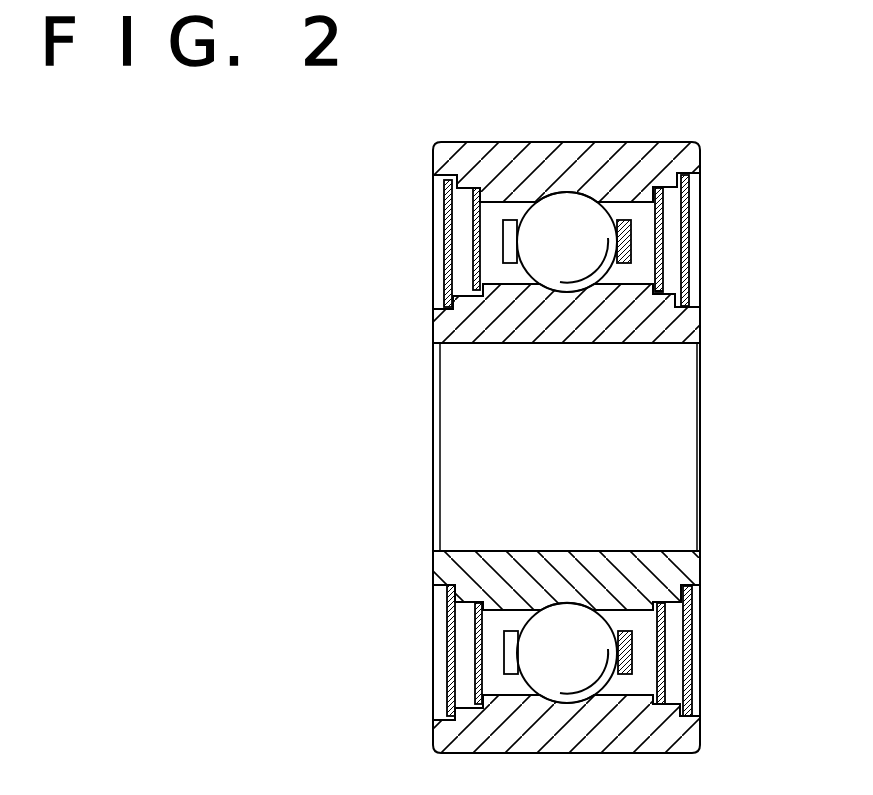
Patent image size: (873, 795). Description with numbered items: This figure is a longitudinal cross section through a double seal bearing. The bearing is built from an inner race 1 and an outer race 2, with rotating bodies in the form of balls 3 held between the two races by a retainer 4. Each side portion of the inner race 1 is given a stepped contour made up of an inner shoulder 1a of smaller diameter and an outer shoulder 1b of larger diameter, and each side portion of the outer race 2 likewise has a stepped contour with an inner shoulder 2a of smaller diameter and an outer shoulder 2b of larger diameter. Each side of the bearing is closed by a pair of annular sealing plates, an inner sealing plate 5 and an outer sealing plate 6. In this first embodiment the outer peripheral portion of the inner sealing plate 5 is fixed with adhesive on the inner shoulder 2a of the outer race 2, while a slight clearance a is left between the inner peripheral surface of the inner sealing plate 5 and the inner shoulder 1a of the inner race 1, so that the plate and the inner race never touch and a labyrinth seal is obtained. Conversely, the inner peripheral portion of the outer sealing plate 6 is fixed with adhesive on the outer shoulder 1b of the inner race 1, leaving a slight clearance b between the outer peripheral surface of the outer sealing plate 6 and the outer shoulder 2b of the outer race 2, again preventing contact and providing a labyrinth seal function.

The inner race 1 is at (473, 338).
The inner shoulder 1a is at (697, 289).
The outer shoulder 1b is at (698, 300).
The outer race 2 is at (440, 160).
The inner shoulder 2a is at (690, 215).
The outer shoulder 2b is at (702, 178).
The balls 3 is at (550, 272).
The retainer 4 is at (630, 270).
The inner sealing plate 5 is at (662, 240).
The outer sealing plate 6 is at (689, 266).
The clearance a is at (655, 291).
The clearance b is at (673, 203).